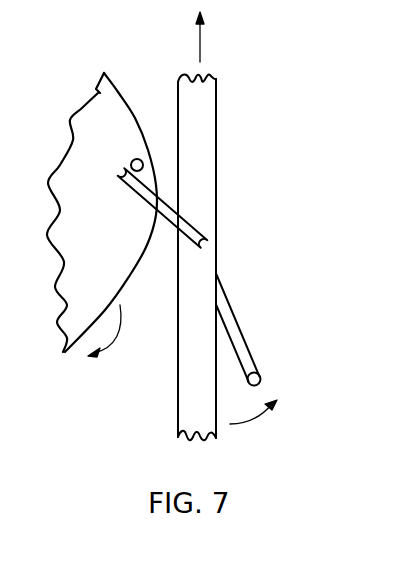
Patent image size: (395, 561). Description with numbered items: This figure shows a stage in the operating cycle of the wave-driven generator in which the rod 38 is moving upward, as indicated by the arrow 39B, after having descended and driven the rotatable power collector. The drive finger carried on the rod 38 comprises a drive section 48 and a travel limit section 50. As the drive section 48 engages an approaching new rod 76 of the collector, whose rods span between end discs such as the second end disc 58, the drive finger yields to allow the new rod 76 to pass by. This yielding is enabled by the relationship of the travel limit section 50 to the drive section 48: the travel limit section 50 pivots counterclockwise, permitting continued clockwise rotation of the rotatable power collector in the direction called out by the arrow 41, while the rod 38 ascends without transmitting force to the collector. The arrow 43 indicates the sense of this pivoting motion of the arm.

The rod 38 is at (207, 361).
The arrow 39B is at (203, 38).
The arrow 41 is at (118, 338).
The rotation direction of arm 43 is at (257, 421).
The drive section 48 is at (120, 185).
The travel limit section 50 is at (238, 318).
The second end disc 58 is at (103, 259).
The new rod 76 is at (139, 158).